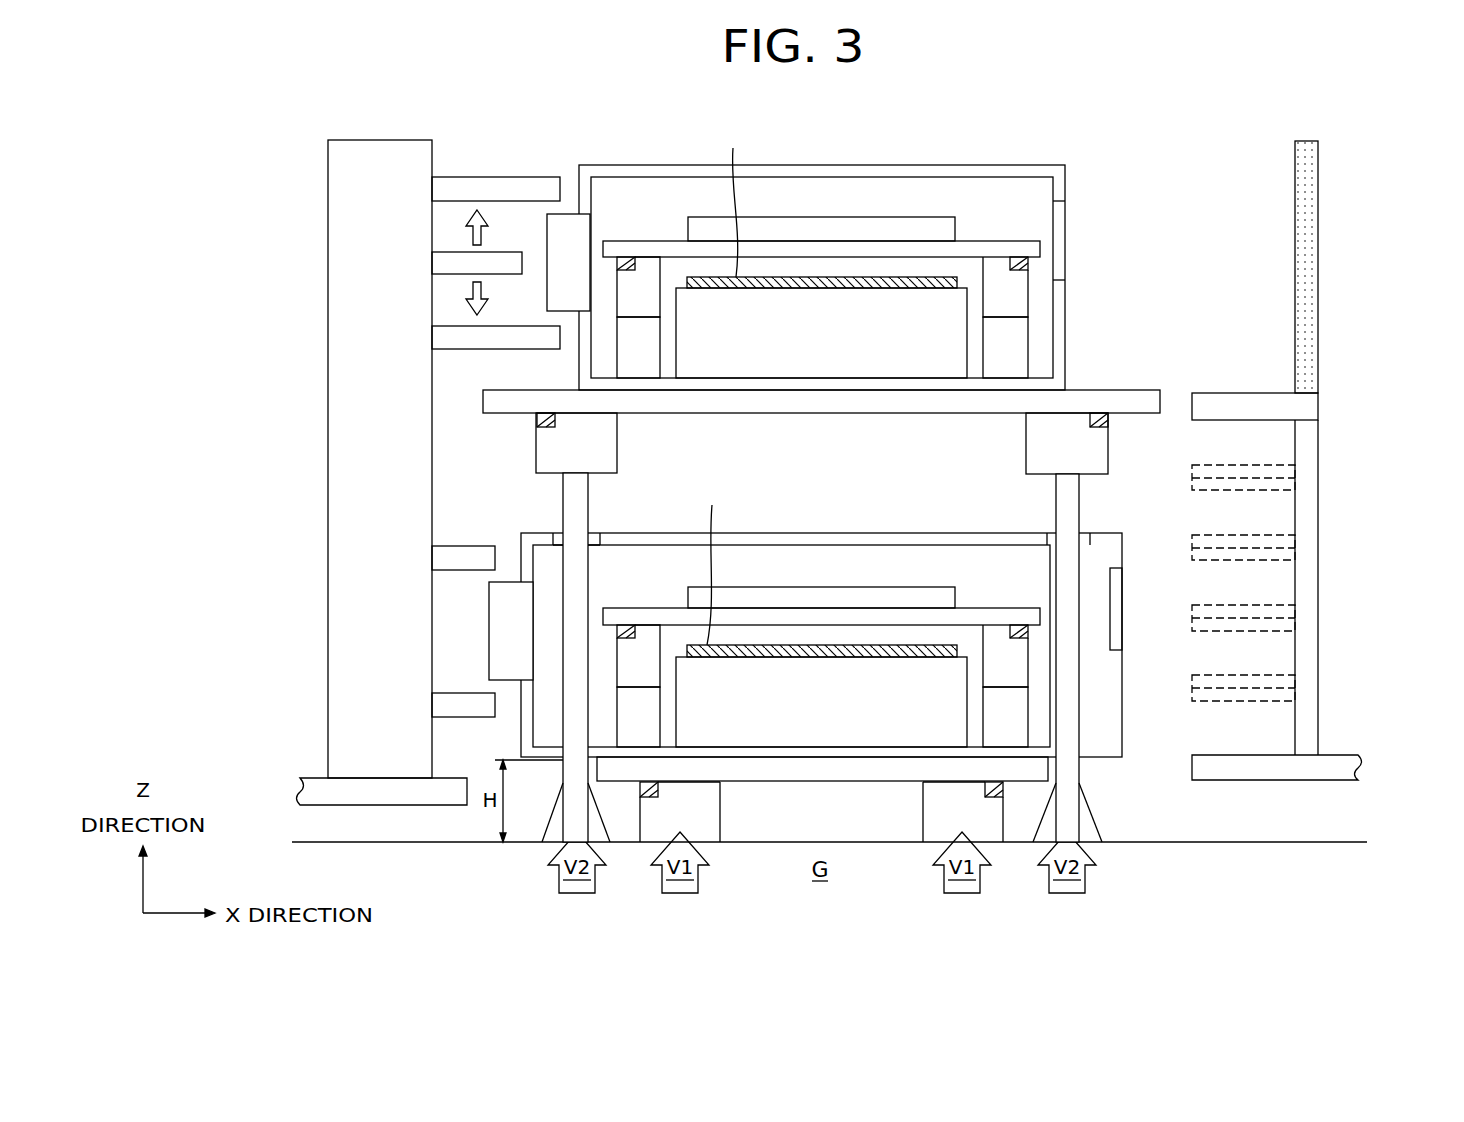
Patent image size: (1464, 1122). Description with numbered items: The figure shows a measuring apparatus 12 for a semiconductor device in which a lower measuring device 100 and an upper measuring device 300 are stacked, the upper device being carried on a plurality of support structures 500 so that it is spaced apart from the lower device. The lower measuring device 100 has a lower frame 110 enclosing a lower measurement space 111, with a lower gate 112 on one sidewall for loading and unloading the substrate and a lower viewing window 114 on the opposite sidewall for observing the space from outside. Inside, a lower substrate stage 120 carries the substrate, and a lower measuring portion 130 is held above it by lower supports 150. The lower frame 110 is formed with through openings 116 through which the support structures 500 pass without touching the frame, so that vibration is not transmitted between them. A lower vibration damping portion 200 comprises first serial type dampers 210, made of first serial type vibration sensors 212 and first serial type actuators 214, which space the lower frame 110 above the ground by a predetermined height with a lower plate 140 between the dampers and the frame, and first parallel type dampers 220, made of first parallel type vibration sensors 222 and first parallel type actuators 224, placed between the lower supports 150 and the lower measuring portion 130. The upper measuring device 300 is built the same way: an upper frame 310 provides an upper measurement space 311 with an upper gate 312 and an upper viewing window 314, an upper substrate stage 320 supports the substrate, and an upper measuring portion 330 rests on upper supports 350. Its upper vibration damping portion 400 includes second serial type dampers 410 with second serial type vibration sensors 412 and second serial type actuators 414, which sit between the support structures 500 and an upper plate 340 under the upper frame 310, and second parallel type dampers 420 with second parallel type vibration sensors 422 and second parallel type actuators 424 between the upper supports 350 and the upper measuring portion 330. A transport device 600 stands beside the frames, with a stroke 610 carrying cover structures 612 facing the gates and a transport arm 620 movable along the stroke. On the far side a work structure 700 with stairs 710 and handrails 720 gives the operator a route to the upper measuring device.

The measuring apparatus 12 is at (806, 102).
The lower measuring device 100 is at (993, 500).
The lower frame 110 is at (903, 538).
The lower measurement space 111 is at (804, 579).
The lower gate 112 is at (500, 600).
The lower viewing window 114 is at (1118, 582).
The through openings 116 is at (540, 536).
The lower substrate stage 120 is at (804, 711).
The lower measuring portion 130 is at (769, 597).
The lower plate 140 is at (1042, 771).
The lower supports 150 is at (1018, 717).
The lower vibration damping portion 200 is at (193, 618).
The first serial type dampers 210 is at (244, 700).
The first serial type vibration sensors 212 is at (682, 793).
The first serial type actuators 214 is at (642, 782).
The first parallel type dampers 220 is at (244, 610).
The first parallel type vibration sensors 222 is at (615, 632).
The first parallel type actuators 224 is at (617, 657).
The upper measuring device 300 is at (1082, 145).
The upper frame 310 is at (1062, 180).
The upper measurement space 311 is at (804, 209).
The upper gate 312 is at (550, 233).
The upper viewing window 314 is at (1062, 241).
The upper substrate stage 320 is at (804, 344).
The upper measuring portion 330 is at (935, 222).
The upper plate 340 is at (1142, 402).
The upper supports 350 is at (1023, 344).
The upper vibration damping portion 400 is at (193, 318).
The second serial type dampers 410 is at (244, 365).
The second serial type vibration sensors 412 is at (543, 418).
The second serial type actuators 414 is at (545, 452).
The second parallel type dampers 420 is at (244, 307).
The second parallel type vibration sensors 422 is at (617, 265).
The second parallel type actuators 424 is at (617, 288).
The support structures 500 is at (1073, 815).
The transport device 600 is at (243, 213).
The stroke 610 is at (332, 227).
The cover structures 612 is at (472, 190).
The transport arm 620 is at (437, 256).
The work structure 700 is at (1402, 347).
The stairs 710 is at (1310, 414).
The handrails 720 is at (1310, 360).